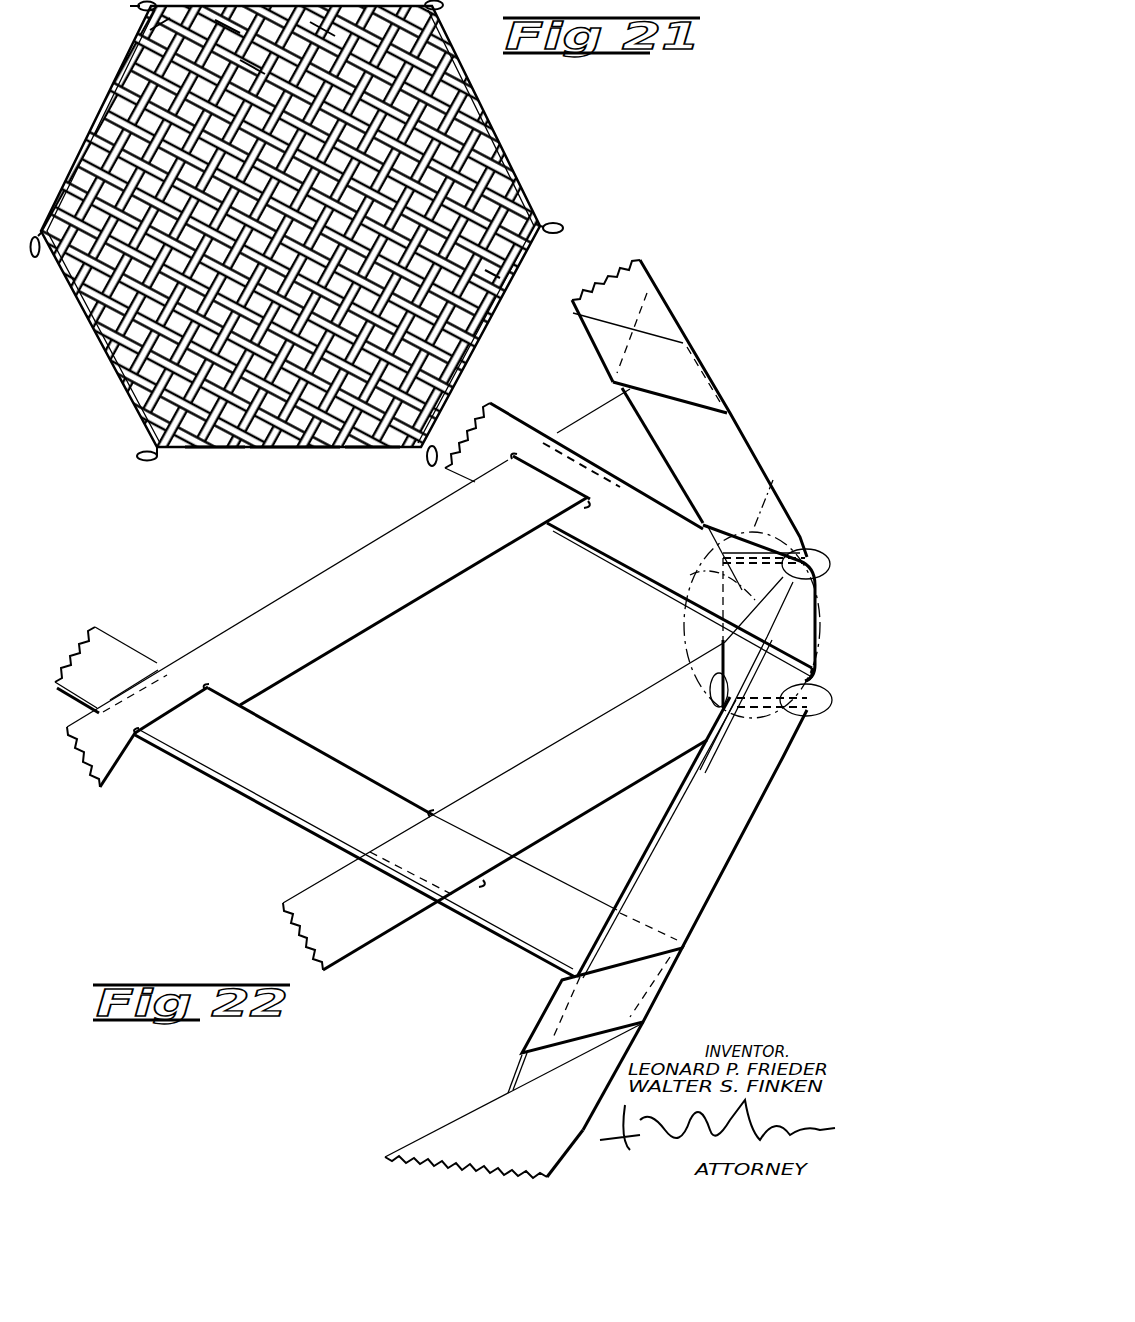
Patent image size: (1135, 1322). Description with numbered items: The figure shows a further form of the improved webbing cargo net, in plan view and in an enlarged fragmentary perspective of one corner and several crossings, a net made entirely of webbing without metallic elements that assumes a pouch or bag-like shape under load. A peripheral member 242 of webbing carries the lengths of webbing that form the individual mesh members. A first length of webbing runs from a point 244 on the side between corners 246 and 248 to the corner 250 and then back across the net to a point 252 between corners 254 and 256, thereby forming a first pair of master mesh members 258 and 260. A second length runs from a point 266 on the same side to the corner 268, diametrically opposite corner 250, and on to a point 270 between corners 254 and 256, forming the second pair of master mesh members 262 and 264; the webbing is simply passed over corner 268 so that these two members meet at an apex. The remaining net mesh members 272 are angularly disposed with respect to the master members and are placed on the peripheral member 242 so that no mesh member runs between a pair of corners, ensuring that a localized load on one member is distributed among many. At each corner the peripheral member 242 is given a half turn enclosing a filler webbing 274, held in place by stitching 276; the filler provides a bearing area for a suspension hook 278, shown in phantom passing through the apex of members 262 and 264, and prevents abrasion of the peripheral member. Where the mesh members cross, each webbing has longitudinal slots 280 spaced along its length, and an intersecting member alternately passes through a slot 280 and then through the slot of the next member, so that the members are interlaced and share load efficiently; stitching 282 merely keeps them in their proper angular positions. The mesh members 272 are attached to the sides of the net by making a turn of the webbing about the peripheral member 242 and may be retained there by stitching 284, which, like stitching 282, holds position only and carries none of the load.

In FIG. 21, the peripheral member 242 is at (488, 128).
In FIG. 22, the peripheral member 242 is at (752, 438).
In FIG. 21, the point intermediate corners 244 is at (335, 36).
In FIG. 21, the corner of the net 246 is at (147, 10).
In FIG. 21, the corner of the net 248 is at (442, 8).
In FIG. 21, the corner of the net 250 is at (40, 235).
In FIG. 21, the point intermediate corners 252 is at (355, 450).
In FIG. 21, the corner of the net 254 is at (152, 462).
In FIG. 21, the corner of the net 256 is at (428, 463).
In FIG. 21, the master mesh member 258 is at (269, 74).
In FIG. 21, the master mesh member 260 is at (300, 450).
In FIG. 21, the master mesh member 262 is at (228, 35).
In FIG. 22, the master mesh member 262 is at (610, 552).
In FIG. 21, the master mesh member 264 is at (500, 285).
In FIG. 22, the master mesh member 264 is at (592, 722).
In FIG. 21, the point on side of the net 266 is at (169, 36).
In FIG. 21, the corner of the net 268 is at (552, 222).
In FIG. 22, the corner of the net 268 is at (703, 628).
In FIG. 21, the point intermediate corners 270 is at (215, 450).
In FIG. 21, the net mesh members 272 is at (135, 66).
In FIG. 22, the net mesh members 272 is at (425, 598).
In FIG. 22, the filler webbing 274 is at (735, 722).
In FIG. 22, the stitching 276 is at (792, 548).
In FIG. 22, the suspension hook 278 is at (770, 545).
In FIG. 22, the longitudinal slots 280 is at (212, 688).
In FIG. 22, the stitching 282 is at (160, 676).
In FIG. 22, the stitching 284 is at (705, 365).